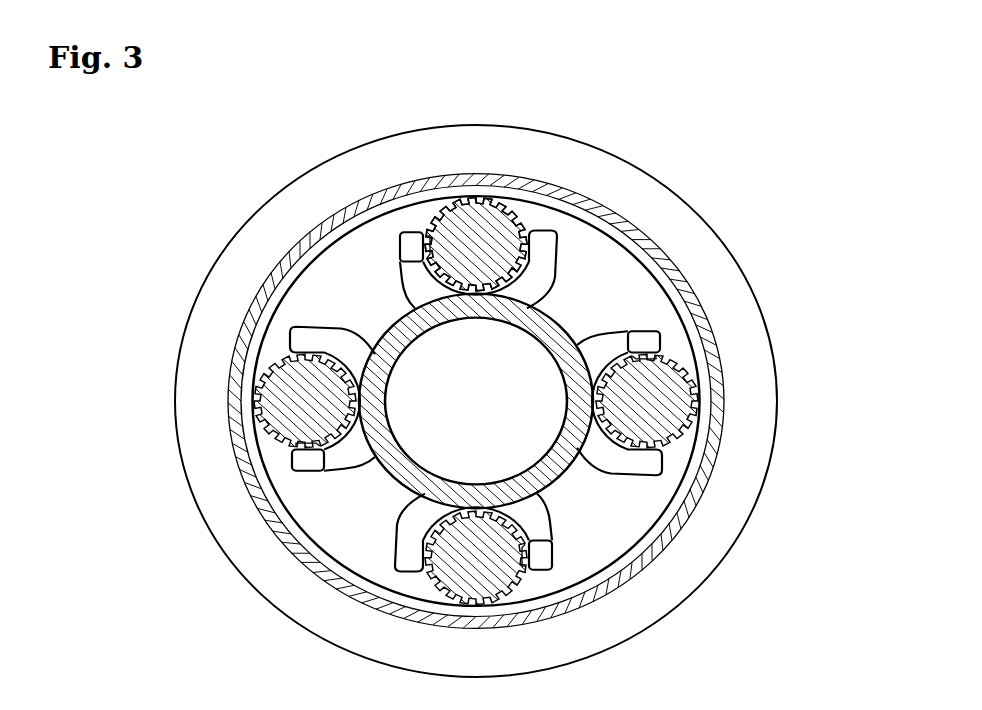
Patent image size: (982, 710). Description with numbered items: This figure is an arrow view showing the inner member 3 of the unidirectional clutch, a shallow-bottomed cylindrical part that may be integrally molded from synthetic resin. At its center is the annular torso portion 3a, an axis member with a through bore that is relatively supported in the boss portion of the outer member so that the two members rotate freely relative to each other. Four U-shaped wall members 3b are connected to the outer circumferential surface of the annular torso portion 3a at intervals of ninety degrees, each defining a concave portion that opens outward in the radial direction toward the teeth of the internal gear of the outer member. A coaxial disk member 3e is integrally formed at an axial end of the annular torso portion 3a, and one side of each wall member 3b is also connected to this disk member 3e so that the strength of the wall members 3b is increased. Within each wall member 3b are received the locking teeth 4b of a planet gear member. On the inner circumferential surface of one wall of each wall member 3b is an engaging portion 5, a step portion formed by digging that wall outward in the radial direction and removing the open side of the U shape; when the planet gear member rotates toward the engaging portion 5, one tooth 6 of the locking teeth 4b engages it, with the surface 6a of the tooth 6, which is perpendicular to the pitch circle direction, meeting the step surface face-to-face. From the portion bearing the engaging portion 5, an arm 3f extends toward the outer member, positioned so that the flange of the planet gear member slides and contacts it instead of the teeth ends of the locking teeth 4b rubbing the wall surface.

The inner member 3 is at (231, 152).
The annular torso portion 3a is at (561, 331).
The U-shaped wall member 3b is at (564, 253).
The disk member 3e is at (686, 199).
The arm 3f is at (401, 247).
The locking teeth 4b is at (522, 212).
The engaging portion 5 is at (363, 199).
The tooth 6 is at (437, 217).
The surface 6a is at (427, 237).